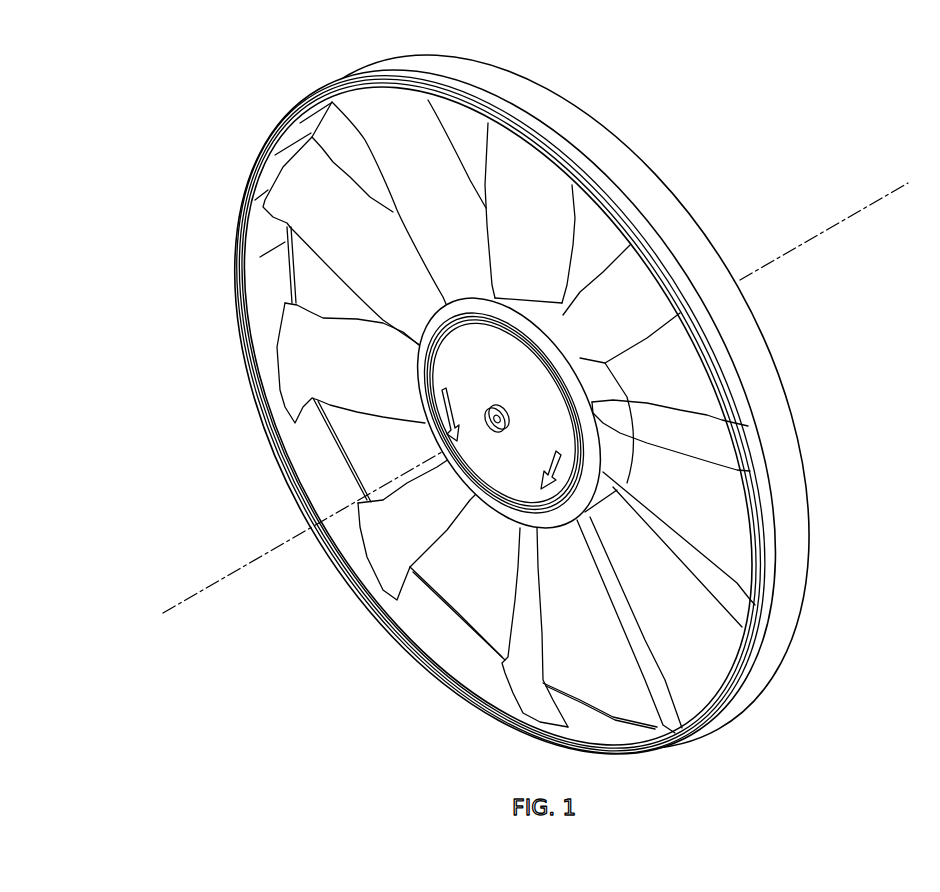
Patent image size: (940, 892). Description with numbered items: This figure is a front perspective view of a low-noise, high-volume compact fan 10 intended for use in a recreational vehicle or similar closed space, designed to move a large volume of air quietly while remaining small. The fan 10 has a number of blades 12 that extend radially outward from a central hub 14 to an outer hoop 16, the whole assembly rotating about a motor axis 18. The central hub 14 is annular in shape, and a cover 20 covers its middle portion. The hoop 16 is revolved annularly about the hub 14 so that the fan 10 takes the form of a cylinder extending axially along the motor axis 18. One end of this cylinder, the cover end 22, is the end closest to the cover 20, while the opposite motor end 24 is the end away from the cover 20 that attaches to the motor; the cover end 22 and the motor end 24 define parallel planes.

The compact fan 10 is at (523, 424).
The blades 12 is at (303, 360).
The central hub 14 is at (608, 385).
The outer hoop 16 is at (750, 343).
The motor axis 18 is at (205, 595).
The cover 20 is at (507, 478).
The cover end 22 is at (712, 672).
The motor end 24 is at (810, 530).